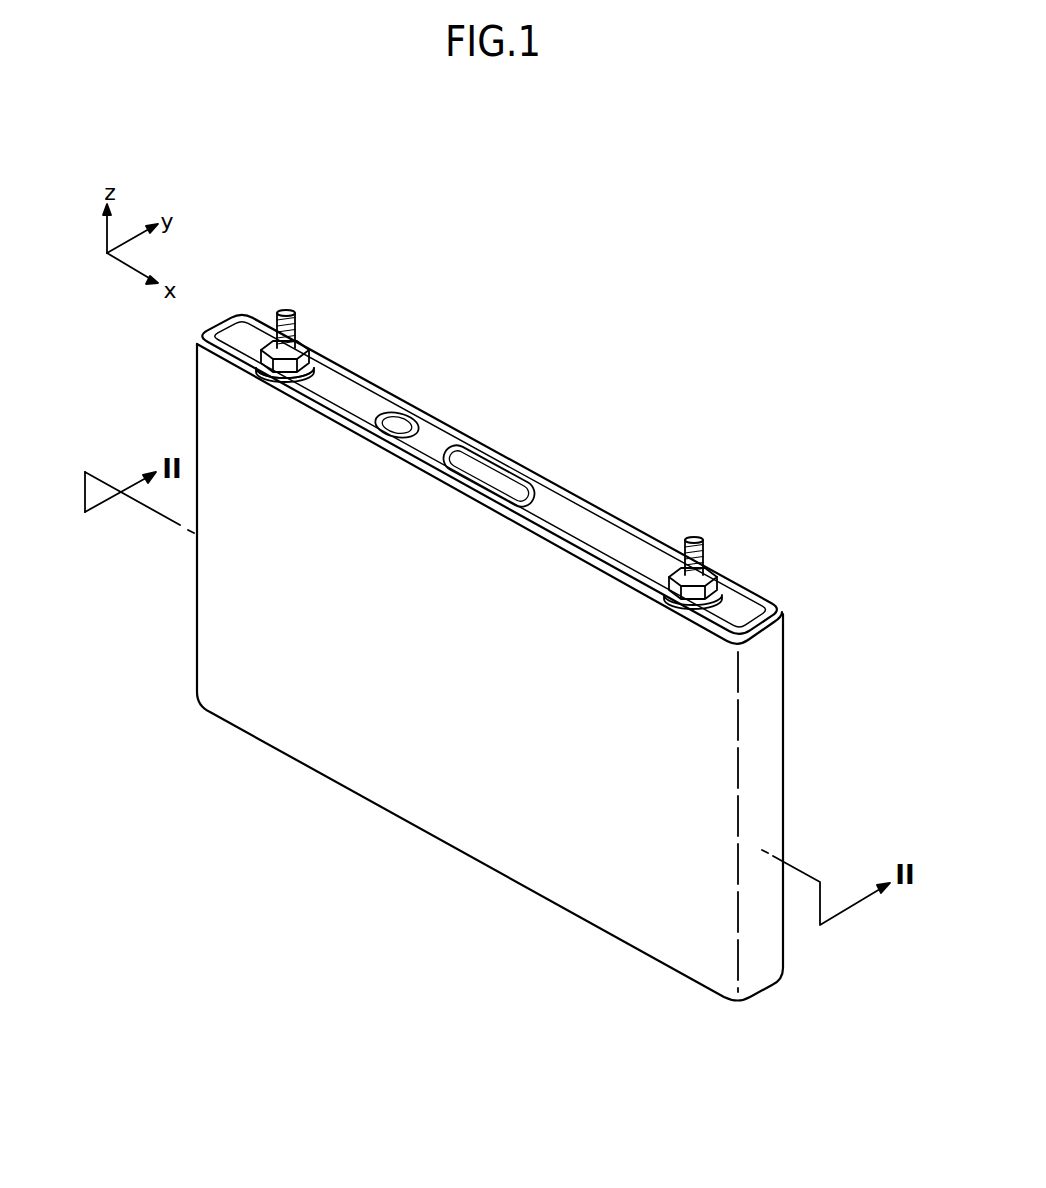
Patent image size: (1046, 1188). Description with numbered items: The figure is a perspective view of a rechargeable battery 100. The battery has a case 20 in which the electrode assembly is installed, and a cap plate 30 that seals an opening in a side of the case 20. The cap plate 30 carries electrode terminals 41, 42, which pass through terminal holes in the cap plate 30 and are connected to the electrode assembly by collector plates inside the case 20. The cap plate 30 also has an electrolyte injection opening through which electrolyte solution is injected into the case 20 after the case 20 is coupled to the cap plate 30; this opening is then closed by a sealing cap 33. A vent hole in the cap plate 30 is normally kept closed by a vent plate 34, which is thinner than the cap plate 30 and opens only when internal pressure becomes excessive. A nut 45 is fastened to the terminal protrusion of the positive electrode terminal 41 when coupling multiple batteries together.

The rechargeable battery 100 is at (651, 378).
The case 20 is at (470, 832).
The cap plate 30 is at (438, 443).
The sealing cap 33 is at (400, 422).
The vent plate 34 is at (488, 477).
The positive electrode terminal 41 is at (286, 312).
The electrode terminal 42 is at (693, 540).
The nut 45 is at (306, 350).